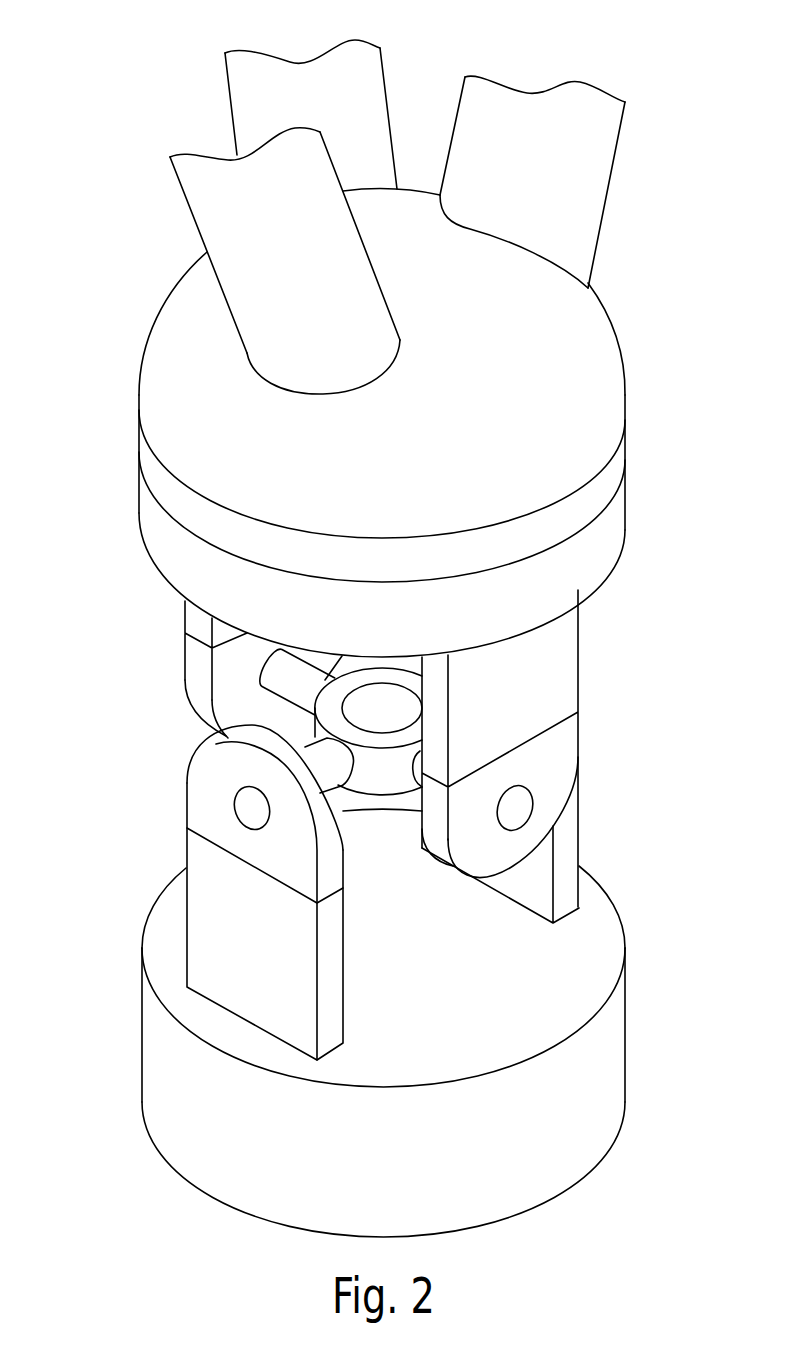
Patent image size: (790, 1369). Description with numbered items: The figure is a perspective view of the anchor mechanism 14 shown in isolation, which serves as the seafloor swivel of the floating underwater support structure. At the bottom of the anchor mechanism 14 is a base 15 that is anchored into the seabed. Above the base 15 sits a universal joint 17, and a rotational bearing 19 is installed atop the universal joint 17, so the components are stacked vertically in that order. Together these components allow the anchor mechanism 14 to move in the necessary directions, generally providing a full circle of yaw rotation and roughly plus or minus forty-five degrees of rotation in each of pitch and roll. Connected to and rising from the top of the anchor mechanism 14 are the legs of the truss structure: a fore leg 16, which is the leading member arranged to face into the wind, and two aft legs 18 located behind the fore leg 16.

The anchor mechanism 14 is at (106, 592).
The base 15 is at (159, 1053).
The fore leg 16 is at (592, 162).
The universal joint 17 is at (197, 790).
The aft legs 18 is at (243, 103).
The rotational bearing 19 is at (605, 542).